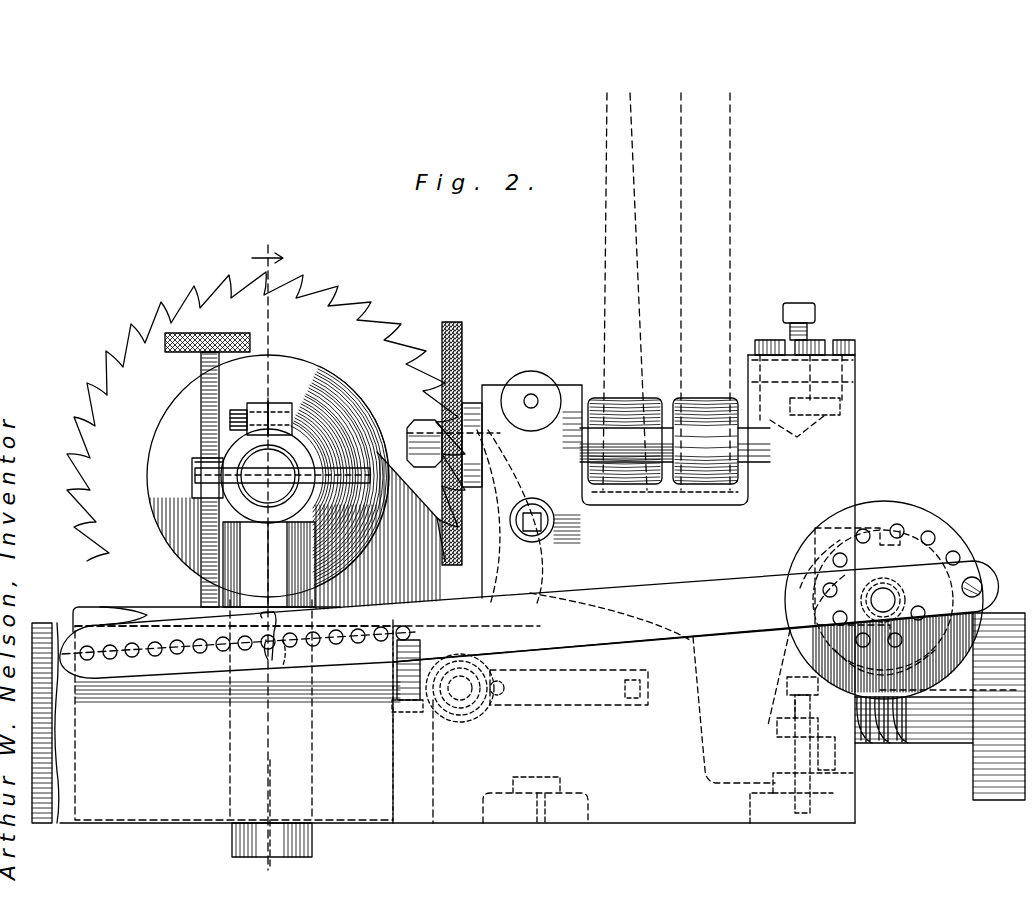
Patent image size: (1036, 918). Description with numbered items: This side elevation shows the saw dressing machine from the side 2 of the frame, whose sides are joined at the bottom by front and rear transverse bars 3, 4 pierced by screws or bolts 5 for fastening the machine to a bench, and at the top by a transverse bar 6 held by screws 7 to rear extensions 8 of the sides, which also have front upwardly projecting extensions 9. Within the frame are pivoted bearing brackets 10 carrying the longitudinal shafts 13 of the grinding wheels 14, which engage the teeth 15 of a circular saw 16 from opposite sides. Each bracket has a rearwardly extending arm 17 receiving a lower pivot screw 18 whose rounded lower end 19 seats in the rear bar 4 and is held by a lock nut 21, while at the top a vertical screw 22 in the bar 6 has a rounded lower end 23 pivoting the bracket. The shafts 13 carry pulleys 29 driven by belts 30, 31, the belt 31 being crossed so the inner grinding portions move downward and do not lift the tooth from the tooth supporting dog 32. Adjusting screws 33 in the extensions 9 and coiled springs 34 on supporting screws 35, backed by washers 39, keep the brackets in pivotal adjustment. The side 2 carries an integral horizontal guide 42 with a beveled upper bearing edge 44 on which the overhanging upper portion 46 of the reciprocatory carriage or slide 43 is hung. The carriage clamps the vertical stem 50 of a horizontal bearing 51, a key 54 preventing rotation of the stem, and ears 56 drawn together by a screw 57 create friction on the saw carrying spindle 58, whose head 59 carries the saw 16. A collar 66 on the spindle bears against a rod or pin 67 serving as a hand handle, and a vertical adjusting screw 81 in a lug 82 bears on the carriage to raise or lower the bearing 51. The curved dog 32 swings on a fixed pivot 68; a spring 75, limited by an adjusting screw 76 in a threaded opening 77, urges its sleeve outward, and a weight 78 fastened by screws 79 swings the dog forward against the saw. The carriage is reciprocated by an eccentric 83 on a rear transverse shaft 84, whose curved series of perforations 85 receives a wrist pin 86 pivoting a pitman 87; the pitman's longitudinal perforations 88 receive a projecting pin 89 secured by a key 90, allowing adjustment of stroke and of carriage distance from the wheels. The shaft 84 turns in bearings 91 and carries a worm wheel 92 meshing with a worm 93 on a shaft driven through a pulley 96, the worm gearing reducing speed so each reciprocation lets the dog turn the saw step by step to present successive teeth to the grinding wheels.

The side 2 is at (647, 546).
The transverse bar 3 is at (486, 796).
The transverse bar 4 is at (748, 805).
The screws or bolts 5 is at (556, 778).
The transverse bar 6 is at (855, 371).
The screws 7 is at (272, 862).
The rear extensions 8 is at (855, 438).
The front upwardly projecting portions or extensions 9 is at (615, 476).
The bearing brackets 10 is at (698, 663).
The longitudinal shafts 13 is at (675, 444).
The grinding disks or wheels 14 is at (463, 336).
The teeth 15 is at (410, 318).
The circular saw 16 is at (378, 470).
The rearwardly extending arms 17 is at (838, 768).
The lower vertical pivot screws 18 is at (786, 707).
The rounded lower ends 19 is at (803, 815).
The lock nuts 21 is at (778, 730).
The vertical screws 22 is at (815, 312).
The rounded lower ends 23 is at (856, 404).
The pulleys 29 is at (680, 398).
The belt 30 is at (731, 228).
The belt 31 is at (606, 256).
The tooth supporting dog 32 is at (540, 612).
The adjusting screws 33 is at (533, 399).
The coiled springs 34 is at (556, 521).
The supporting screws 35 is at (540, 531).
The washers 39 is at (540, 510).
The guide 42 is at (457, 752).
The carriage or slide 43 is at (78, 763).
The beveled upper bearing edge 44 is at (44, 622).
The outwardly extending upper portion 46 is at (103, 612).
The vertical stem 50 is at (230, 836).
The horizontal bearing 51 is at (306, 454).
The key 54 is at (268, 584).
The ears 56 is at (270, 402).
The screw 57 is at (294, 418).
The saw carrying spindle 58 is at (268, 476).
The head 59 is at (172, 438).
The collar 66 is at (312, 490).
The rod or pin 67 is at (195, 483).
The fixed pivot 68 is at (458, 705).
The spring 75 is at (568, 707).
The adjusting screw 76 is at (505, 688).
The threaded opening 77 is at (480, 712).
The weight 78 is at (412, 713).
The screws 79 is at (398, 696).
The adjusting screw 81 is at (202, 583).
The lug 82 is at (192, 462).
The eccentric 83 is at (793, 566).
The rear transverse shaft 84 is at (898, 595).
The perforations 85 is at (930, 532).
The crank or wrist pin 86 is at (980, 580).
The rod or pitman 87 is at (529, 619).
The perforations 88 is at (148, 660).
The projecting pin 89 is at (266, 662).
The key 90 is at (292, 660).
The bearings 91 is at (960, 537).
The worm wheel 92 is at (798, 603).
The worm 93 is at (902, 742).
The pulley 96 is at (1000, 795).